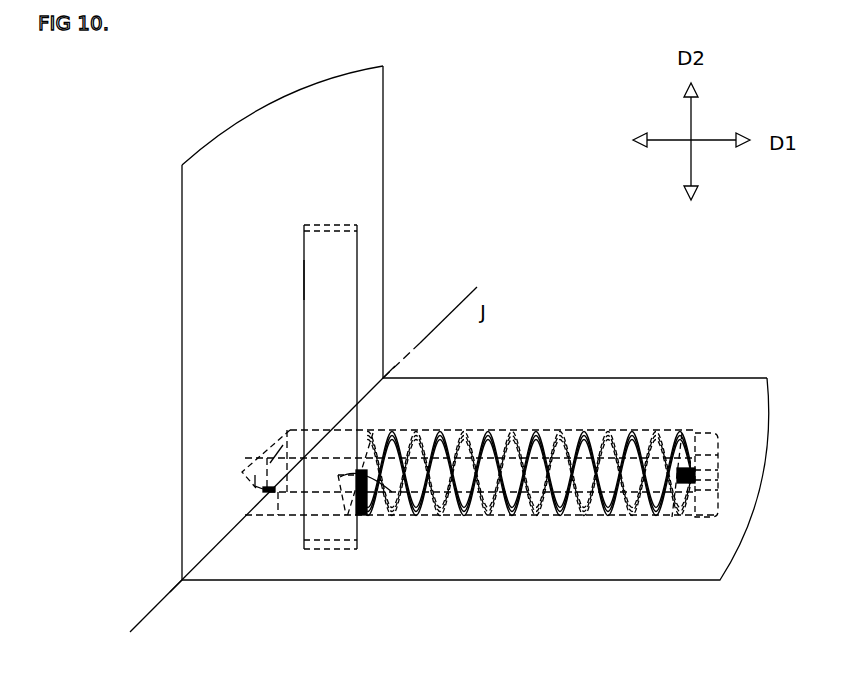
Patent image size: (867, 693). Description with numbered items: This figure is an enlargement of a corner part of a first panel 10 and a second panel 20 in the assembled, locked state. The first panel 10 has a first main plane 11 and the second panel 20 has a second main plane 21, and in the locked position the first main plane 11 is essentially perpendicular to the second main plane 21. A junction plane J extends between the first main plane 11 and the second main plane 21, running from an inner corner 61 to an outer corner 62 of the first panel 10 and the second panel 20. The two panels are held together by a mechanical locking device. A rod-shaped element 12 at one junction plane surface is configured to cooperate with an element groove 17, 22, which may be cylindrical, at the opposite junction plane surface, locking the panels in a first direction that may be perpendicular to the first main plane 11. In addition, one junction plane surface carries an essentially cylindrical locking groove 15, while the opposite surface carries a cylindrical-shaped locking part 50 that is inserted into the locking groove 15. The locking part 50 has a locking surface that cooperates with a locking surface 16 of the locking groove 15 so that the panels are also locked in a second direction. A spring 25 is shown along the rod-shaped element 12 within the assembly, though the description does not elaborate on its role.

The first panel 10 is at (243, 195).
The first main plane 11 is at (383, 102).
The rod-shaped element 12 is at (337, 271).
The locking groove 15 is at (297, 428).
The locking surface 16 is at (255, 474).
The element groove 17 is at (357, 225).
The second panel 20 is at (706, 403).
The second main plane 21 is at (637, 378).
The element groove 22 is at (354, 548).
The spring 25 is at (536, 513).
The locking part 50 is at (272, 462).
The inner corner 61 is at (383, 378).
The outer corner 62 is at (182, 580).